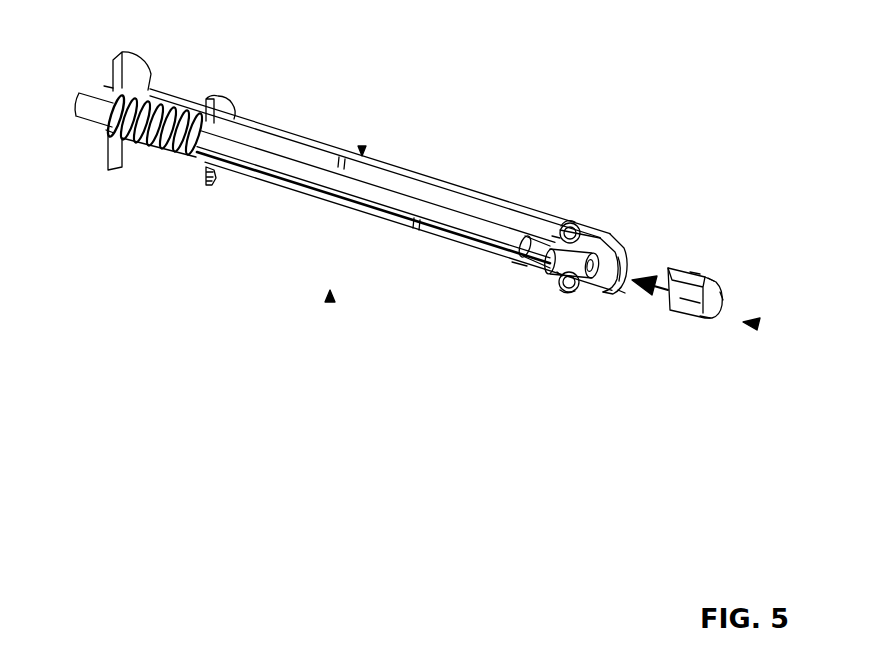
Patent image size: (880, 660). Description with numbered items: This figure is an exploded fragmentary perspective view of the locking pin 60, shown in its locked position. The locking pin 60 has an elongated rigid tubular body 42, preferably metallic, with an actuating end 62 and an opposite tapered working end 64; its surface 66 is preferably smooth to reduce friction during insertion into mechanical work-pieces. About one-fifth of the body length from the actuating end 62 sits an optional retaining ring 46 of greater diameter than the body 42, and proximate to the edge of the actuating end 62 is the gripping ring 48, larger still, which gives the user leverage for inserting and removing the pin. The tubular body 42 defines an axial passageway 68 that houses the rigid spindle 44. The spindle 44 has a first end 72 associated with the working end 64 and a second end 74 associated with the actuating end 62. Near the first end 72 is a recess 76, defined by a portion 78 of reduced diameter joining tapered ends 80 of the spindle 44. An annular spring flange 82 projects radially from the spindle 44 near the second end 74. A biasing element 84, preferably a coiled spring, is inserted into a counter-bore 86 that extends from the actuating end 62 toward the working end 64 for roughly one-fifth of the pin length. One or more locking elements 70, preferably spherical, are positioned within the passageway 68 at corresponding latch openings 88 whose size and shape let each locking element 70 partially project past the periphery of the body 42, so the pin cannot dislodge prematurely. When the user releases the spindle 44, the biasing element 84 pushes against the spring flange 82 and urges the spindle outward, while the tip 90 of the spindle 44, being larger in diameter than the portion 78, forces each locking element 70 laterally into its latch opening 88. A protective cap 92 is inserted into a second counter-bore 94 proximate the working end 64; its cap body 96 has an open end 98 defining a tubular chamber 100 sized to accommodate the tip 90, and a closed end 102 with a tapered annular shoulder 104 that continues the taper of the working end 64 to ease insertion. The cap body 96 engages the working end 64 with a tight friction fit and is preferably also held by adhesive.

The tubular body 42 is at (400, 176).
The spindle 44 is at (413, 212).
The retaining ring 46 is at (224, 96).
The gripping ring 48 is at (138, 58).
The locking pin 60 is at (330, 302).
The actuating end 62 is at (104, 88).
The tapered working end 64 is at (614, 234).
The surface of the body 66 is at (362, 146).
The axial passageway 68 is at (258, 178).
The locking element 70 is at (577, 223).
The first end 72 is at (601, 283).
The second end 74 is at (72, 102).
The recess 76 is at (524, 275).
The reduced diameter portion 78 is at (555, 236).
The tapered ends 80 is at (518, 268).
The annular spring flange 82 is at (147, 93).
The biasing element 84 is at (136, 145).
The counter-bore 86 is at (203, 176).
The latch opening 88 is at (588, 227).
The tip 90 is at (628, 256).
The protective cap 92 is at (758, 325).
The counter-bore 94 is at (623, 294).
The cap body 96 is at (697, 268).
The open end 98 is at (669, 311).
The tubular chamber 100 is at (712, 278).
The closed end 102 is at (722, 297).
The tapered annular shoulder 104 is at (699, 322).